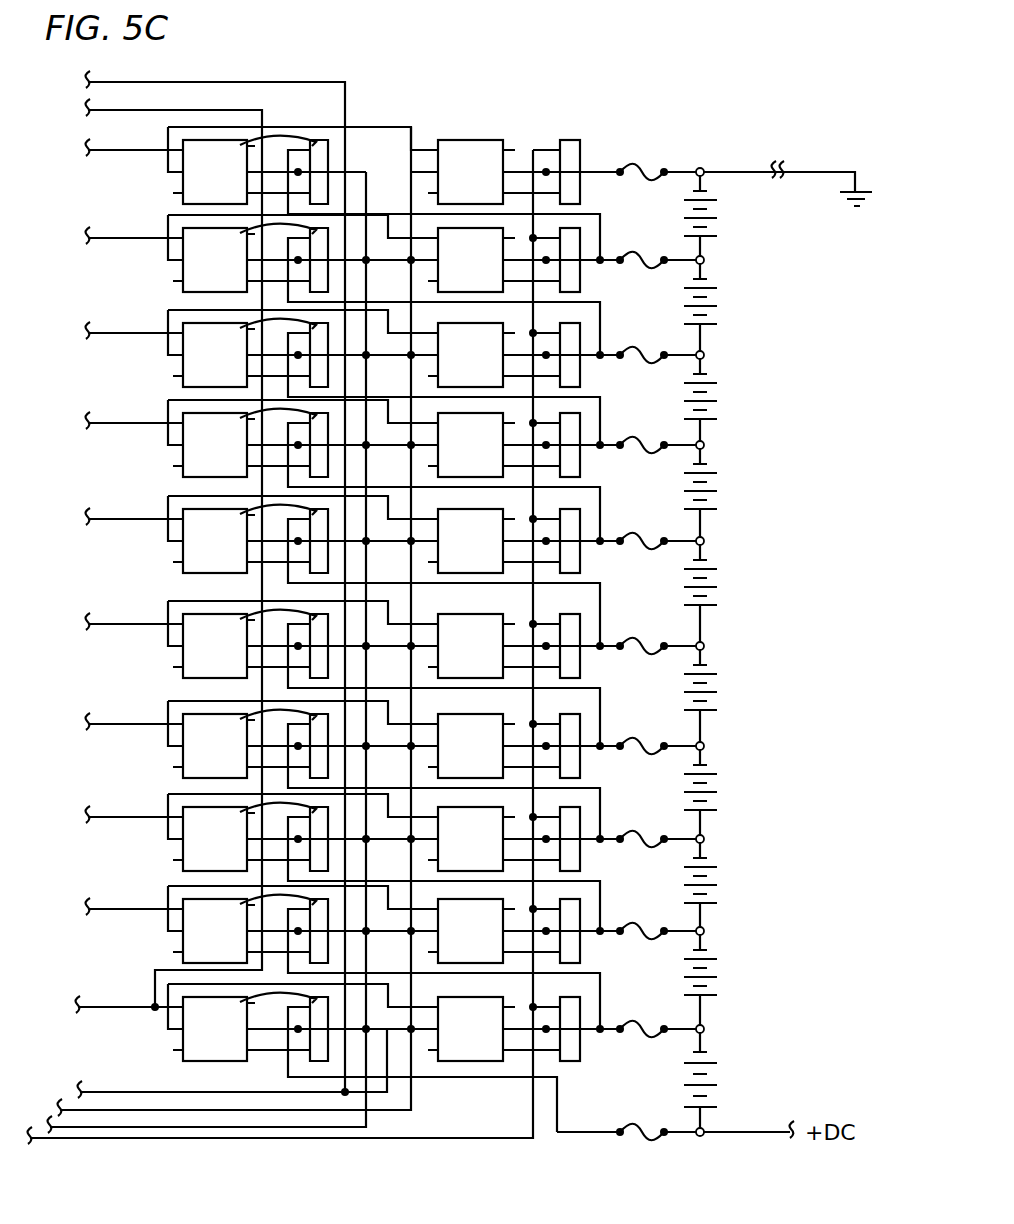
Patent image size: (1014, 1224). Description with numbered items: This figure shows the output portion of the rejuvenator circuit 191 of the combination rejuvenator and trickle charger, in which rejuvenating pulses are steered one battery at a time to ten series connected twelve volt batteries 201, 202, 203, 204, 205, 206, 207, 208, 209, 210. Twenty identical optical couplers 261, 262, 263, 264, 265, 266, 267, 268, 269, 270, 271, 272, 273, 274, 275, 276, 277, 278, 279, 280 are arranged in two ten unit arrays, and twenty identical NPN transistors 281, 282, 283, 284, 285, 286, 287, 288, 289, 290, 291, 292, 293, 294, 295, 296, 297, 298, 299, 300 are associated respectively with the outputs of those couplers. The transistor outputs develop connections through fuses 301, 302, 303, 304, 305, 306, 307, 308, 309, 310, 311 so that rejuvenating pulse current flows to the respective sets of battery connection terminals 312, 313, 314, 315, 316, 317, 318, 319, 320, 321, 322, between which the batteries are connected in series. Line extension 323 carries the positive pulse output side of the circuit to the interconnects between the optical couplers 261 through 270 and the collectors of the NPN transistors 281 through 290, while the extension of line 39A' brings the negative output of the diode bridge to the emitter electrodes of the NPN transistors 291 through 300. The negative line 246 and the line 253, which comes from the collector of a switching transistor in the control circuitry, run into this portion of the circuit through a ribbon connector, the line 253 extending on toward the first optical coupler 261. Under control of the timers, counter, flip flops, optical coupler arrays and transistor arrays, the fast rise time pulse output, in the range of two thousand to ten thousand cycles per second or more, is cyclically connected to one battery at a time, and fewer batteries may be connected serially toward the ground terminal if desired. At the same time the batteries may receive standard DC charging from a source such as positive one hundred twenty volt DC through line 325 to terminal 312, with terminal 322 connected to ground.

The rejuvenator circuit 191 is at (453, 83).
The line 39A' is at (281, 1157).
The negative line 246 is at (66, 1108).
The line 253 is at (178, 1092).
The line extension 323 is at (368, 1118).
The line 325 is at (745, 1132).
The optical coupler 261 is at (169, 1029).
The optical coupler 262 is at (169, 931).
The optical coupler 263 is at (169, 839).
The optical coupler 264 is at (172, 746).
The optical coupler 265 is at (172, 646).
The optical coupler 266 is at (172, 541).
The optical coupler 267 is at (172, 445).
The optical coupler 268 is at (173, 355).
The optical coupler 269 is at (173, 260).
The optical coupler 270 is at (173, 172).
The optical coupler 271 is at (492, 1030).
The optical coupler 272 is at (492, 932).
The optical coupler 273 is at (492, 840).
The optical coupler 274 is at (492, 747).
The optical coupler 275 is at (492, 647).
The optical coupler 276 is at (492, 542).
The optical coupler 277 is at (492, 446).
The optical coupler 278 is at (492, 356).
The optical coupler 279 is at (492, 261).
The optical coupler 280 is at (492, 173).
The NPN transistor 281 is at (215, 1029).
The NPN transistor 282 is at (215, 931).
The NPN transistor 283 is at (215, 839).
The NPN transistor 284 is at (215, 746).
The NPN transistor 285 is at (215, 646).
The NPN transistor 286 is at (215, 541).
The NPN transistor 287 is at (215, 445).
The NPN transistor 288 is at (215, 355).
The NPN transistor 289 is at (215, 260).
The NPN transistor 290 is at (215, 172).
The NPN transistor 291 is at (582, 1002).
The NPN transistor 292 is at (582, 904).
The NPN transistor 293 is at (582, 812).
The NPN transistor 294 is at (582, 719).
The NPN transistor 295 is at (582, 619).
The NPN transistor 296 is at (582, 514).
The NPN transistor 297 is at (582, 418).
The NPN transistor 298 is at (582, 328).
The NPN transistor 299 is at (582, 233).
The NPN transistor 300 is at (582, 142).
The fuse 301 is at (640, 1142).
The fuse 302 is at (648, 1040).
The fuse 303 is at (644, 933).
The fuse 304 is at (644, 841).
The fuse 305 is at (644, 748).
The fuse 306 is at (644, 648).
The fuse 307 is at (644, 543).
The fuse 308 is at (644, 447).
The fuse 309 is at (644, 357).
The fuse 310 is at (644, 262).
The fuse 311 is at (634, 162).
The battery connection terminal 312 is at (703, 1137).
The battery connection terminal 313 is at (705, 1030).
The battery connection terminal 314 is at (706, 931).
The battery connection terminal 315 is at (706, 839).
The battery connection terminal 316 is at (706, 746).
The battery connection terminal 317 is at (706, 646).
The battery connection terminal 318 is at (706, 541).
The battery connection terminal 319 is at (706, 445).
The battery connection terminal 320 is at (706, 355).
The battery connection terminal 321 is at (706, 260).
The battery connection terminal 322 is at (705, 168).
The twelve volt battery 201 is at (712, 1095).
The twelve volt battery 202 is at (720, 987).
The twelve volt battery 203 is at (720, 895).
The twelve volt battery 204 is at (720, 802).
The twelve volt battery 205 is at (720, 702).
The twelve volt battery 206 is at (720, 597).
The twelve volt battery 207 is at (720, 501).
The twelve volt battery 208 is at (720, 411).
The twelve volt battery 209 is at (720, 316).
The twelve volt battery 210 is at (720, 228).